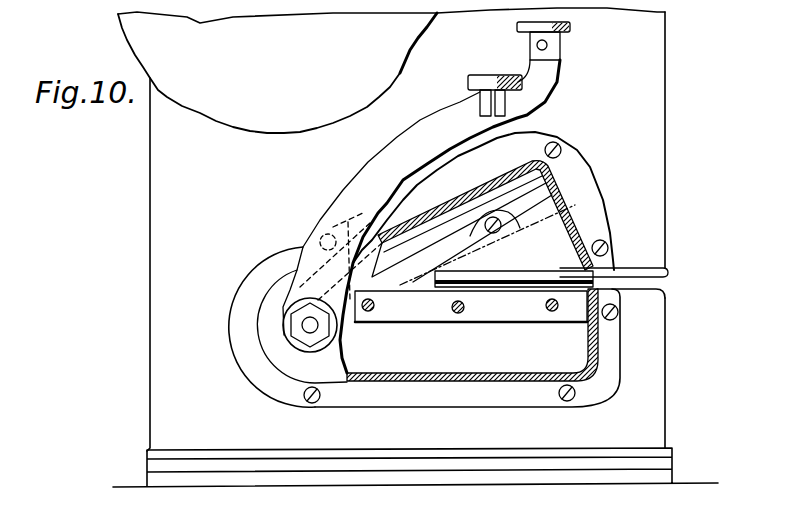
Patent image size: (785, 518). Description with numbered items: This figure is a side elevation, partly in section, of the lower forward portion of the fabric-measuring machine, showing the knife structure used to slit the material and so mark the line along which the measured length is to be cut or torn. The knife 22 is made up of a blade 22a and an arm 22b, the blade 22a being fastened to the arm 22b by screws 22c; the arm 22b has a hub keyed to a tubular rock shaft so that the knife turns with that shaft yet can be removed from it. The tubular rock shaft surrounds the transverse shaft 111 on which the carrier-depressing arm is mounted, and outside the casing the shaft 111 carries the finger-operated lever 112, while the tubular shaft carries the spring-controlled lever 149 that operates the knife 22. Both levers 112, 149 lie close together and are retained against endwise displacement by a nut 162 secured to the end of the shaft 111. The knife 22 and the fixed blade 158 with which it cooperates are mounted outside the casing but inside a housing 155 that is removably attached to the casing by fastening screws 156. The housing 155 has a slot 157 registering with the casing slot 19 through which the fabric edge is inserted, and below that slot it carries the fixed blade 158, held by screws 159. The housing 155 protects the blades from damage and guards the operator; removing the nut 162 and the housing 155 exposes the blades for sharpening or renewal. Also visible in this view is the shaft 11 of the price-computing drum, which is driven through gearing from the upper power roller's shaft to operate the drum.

The shaft of the drum 11 is at (606, 140).
The slot 19 is at (668, 275).
The knife 22 is at (503, 209).
The blade 22a is at (480, 236).
The arm 22b is at (517, 221).
The screws 22c is at (462, 243).
The transverse shaft 111 is at (306, 332).
The operating lever 112 is at (382, 156).
The spring controlled operating lever 149 is at (525, 100).
The housing 155 is at (270, 343).
The fastening screws 156 is at (560, 143).
The slot 157 is at (620, 258).
The fixed blade 158 is at (508, 316).
The screws 159 is at (455, 315).
The nut 162 is at (348, 338).